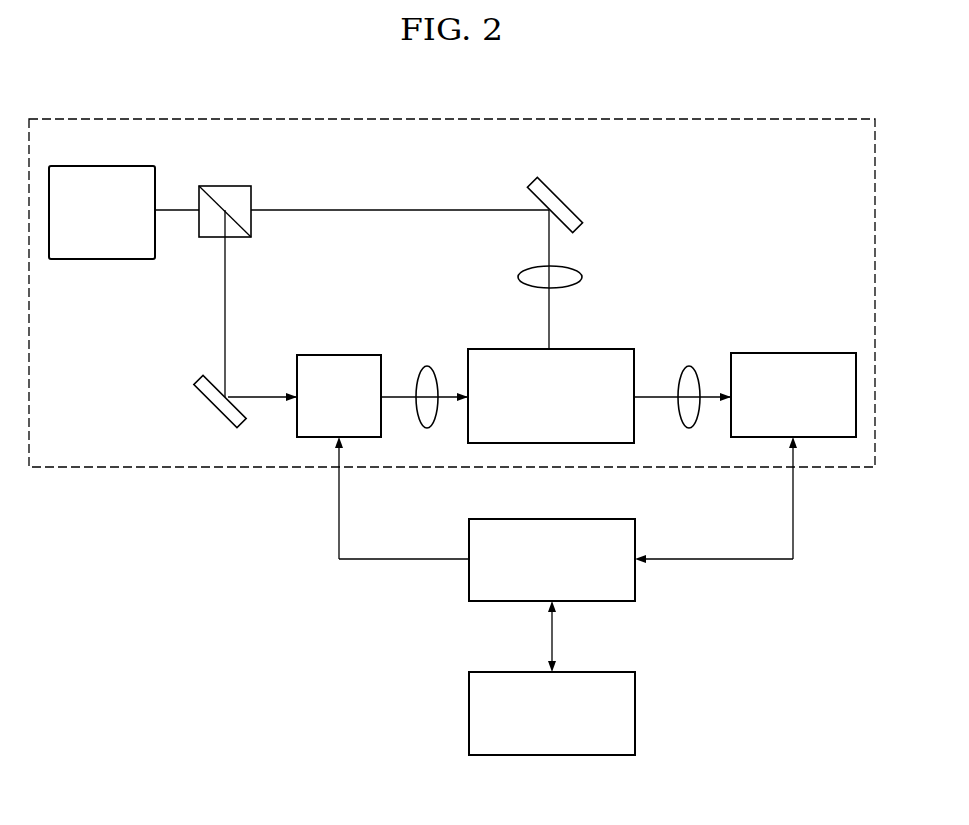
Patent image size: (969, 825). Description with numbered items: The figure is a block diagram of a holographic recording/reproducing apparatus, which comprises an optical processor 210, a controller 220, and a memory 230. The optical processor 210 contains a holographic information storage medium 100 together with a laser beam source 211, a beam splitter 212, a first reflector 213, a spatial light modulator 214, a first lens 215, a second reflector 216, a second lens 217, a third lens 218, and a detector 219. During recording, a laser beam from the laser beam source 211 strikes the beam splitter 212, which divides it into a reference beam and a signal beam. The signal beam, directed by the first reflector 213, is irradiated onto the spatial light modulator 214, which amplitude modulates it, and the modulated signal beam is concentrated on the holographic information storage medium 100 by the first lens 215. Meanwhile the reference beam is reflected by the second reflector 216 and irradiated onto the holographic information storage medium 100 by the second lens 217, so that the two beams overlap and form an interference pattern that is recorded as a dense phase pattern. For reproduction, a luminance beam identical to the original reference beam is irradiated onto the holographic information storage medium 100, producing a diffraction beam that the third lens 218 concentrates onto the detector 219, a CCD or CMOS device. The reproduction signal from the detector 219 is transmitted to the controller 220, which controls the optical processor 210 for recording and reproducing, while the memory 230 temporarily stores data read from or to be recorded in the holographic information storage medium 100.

The optical processor 210 is at (453, 117).
The laser beam source 211 is at (105, 164).
The beam splitter 212 is at (228, 186).
The first reflector 213 is at (213, 410).
The spatial light modulator 214 is at (338, 355).
The first lens 215 is at (427, 366).
The second reflector 216 is at (562, 198).
The second lens 217 is at (582, 278).
The holographic information storage medium 100 is at (577, 347).
The third lens 218 is at (689, 366).
The detector 219 is at (793, 353).
The controller 220 is at (575, 517).
The memory 230 is at (575, 671).